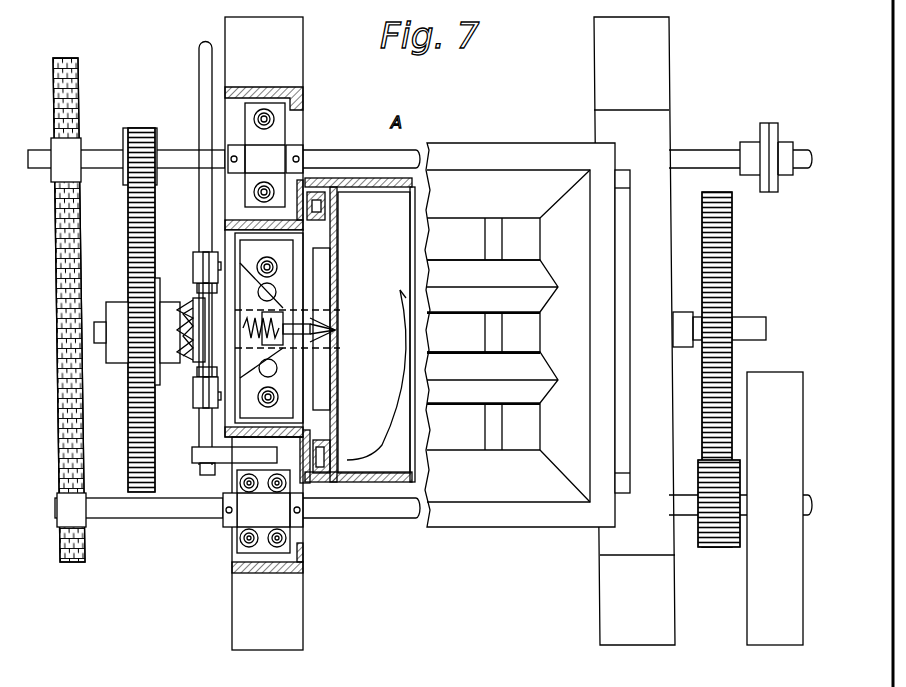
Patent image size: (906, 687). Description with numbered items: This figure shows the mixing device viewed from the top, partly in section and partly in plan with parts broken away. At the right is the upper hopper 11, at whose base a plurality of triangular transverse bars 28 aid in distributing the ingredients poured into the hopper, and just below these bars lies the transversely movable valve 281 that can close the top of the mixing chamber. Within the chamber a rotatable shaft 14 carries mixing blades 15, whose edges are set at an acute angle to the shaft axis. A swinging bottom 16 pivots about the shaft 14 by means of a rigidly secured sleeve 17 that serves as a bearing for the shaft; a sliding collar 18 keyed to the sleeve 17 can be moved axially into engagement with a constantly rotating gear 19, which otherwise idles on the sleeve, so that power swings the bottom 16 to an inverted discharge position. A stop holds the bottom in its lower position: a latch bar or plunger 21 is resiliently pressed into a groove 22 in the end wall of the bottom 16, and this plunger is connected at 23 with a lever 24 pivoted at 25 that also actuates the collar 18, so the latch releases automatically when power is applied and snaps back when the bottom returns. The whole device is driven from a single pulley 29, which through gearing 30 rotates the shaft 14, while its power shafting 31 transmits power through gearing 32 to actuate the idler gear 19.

The upper hopper 11 is at (531, 147).
The rotatable shaft 14 is at (99, 320).
The mixing blades 15 is at (408, 298).
The swinging bottom 16 is at (382, 247).
The sleeve 17 is at (110, 355).
The sliding collar 18 is at (197, 300).
The gear 19 is at (130, 428).
The latch bar or plunger 21 is at (320, 340).
The groove 22 is at (328, 318).
The connection 23 is at (195, 362).
The lever 24 is at (200, 275).
The pivot 25 is at (205, 474).
The triangular transverse bars 28 is at (477, 268).
The transversely movable valve 281 is at (470, 312).
The pulley 29 is at (747, 621).
The gearing 30 is at (704, 462).
The power shafting 31 is at (140, 520).
The gearing 32 is at (78, 120).